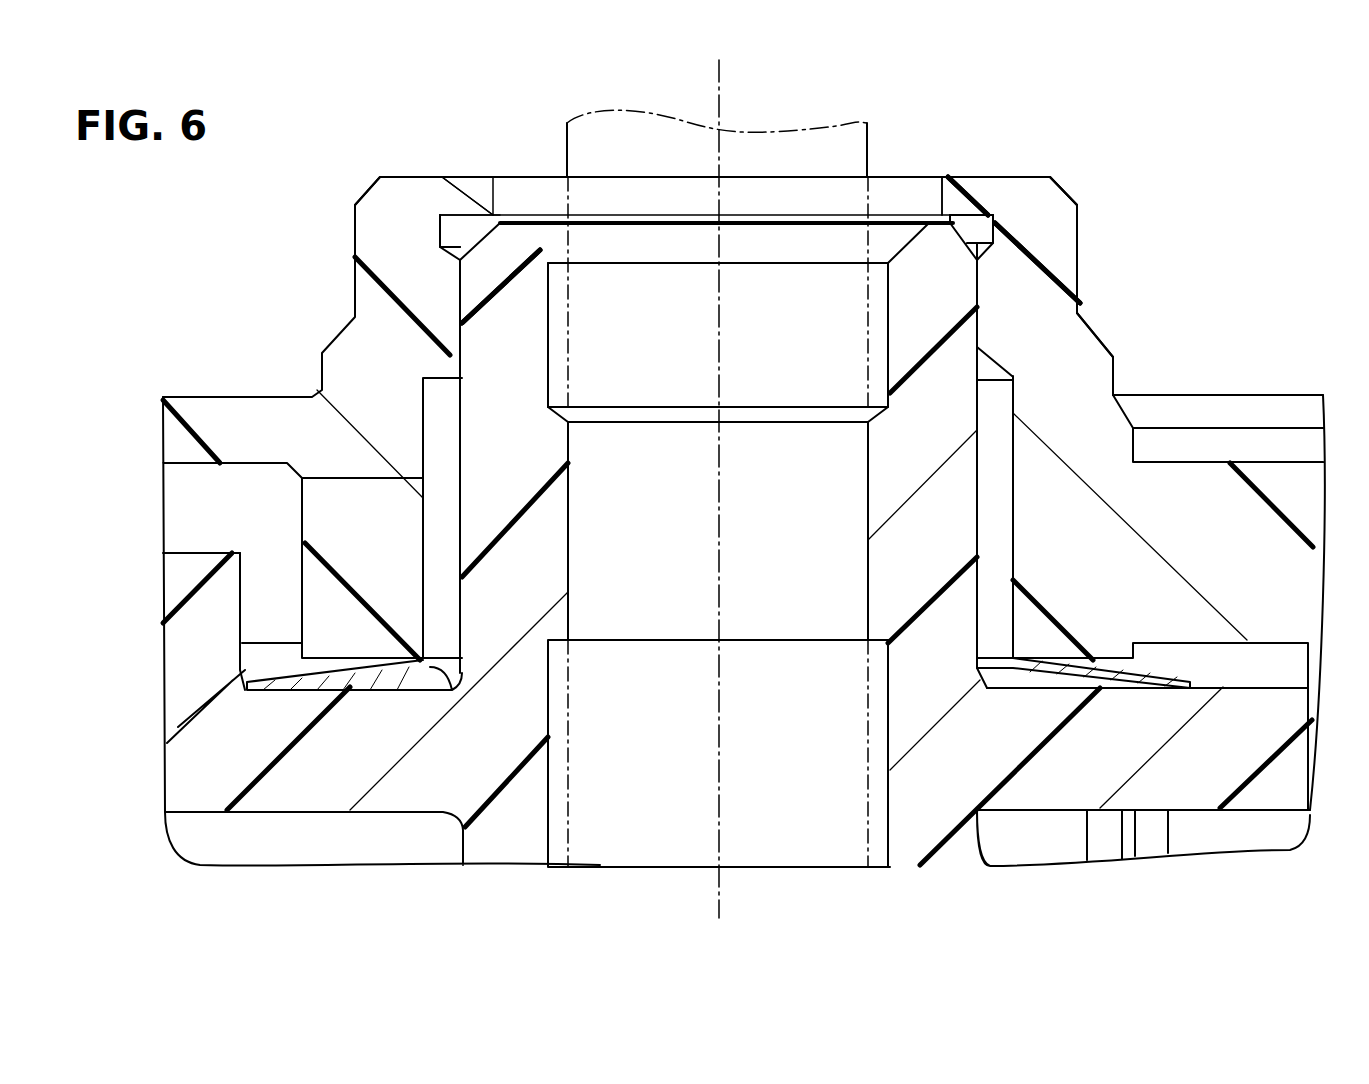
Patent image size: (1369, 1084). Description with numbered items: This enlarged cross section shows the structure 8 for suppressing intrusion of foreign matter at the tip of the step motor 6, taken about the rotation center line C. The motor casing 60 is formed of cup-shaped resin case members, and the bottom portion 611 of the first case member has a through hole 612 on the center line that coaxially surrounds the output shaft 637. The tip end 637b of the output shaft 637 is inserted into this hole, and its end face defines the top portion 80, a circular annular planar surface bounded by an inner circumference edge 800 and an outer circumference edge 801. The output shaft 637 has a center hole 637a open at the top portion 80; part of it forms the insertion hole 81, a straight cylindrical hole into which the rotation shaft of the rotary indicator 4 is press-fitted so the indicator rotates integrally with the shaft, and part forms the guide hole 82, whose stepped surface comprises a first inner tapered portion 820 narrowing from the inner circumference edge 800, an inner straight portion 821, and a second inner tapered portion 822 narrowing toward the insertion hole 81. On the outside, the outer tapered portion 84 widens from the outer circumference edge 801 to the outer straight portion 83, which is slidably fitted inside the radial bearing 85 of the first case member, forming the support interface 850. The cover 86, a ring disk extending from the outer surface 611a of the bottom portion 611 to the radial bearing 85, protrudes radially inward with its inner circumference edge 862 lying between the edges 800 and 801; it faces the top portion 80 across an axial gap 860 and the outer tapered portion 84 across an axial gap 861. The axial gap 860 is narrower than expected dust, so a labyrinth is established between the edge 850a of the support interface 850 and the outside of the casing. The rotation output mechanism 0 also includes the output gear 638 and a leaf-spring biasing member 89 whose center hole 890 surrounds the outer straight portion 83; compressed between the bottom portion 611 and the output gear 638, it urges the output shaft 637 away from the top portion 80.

The rotation center line C is at (719, 84).
The rotary indicator 4 is at (868, 145).
The structure for suppressing intrusion of foreign matters 8 is at (383, 167).
The bottom portion 611 is at (367, 190).
The outer surface 611a is at (452, 177).
The cover 86 is at (468, 190).
The top portion 80 is at (498, 220).
The inner circumference edge 800 is at (938, 215).
The inner circumference edge 862 is at (937, 193).
The step motor 6 is at (1025, 147).
The outer circumference edge 801 is at (978, 190).
The outer tapered portion 84 is at (998, 213).
The edge of the support interface 850a is at (997, 223).
The radial bearing 85 is at (977, 292).
The outer straight portion 83 is at (977, 317).
The guide hole 82 is at (977, 337).
The motor casing 60 is at (1117, 383).
The axial gap 860 is at (497, 218).
The axial gap 861 is at (463, 232).
The tip end 637b is at (500, 260).
The support interface 850 is at (540, 254).
The first inner tapered portion 820 is at (548, 335).
The through hole 612 is at (425, 378).
The inner straight portion 821 is at (570, 487).
The second inner tapered portion 822 is at (567, 463).
The insertion hole 81 is at (569, 532).
The output gear 638 is at (213, 760).
The rotation output mechanism 0 is at (312, 830).
The biasing member 89 is at (405, 662).
The center hole 890 is at (455, 690).
The output shaft 637 is at (507, 832).
The center hole 637a is at (890, 797).